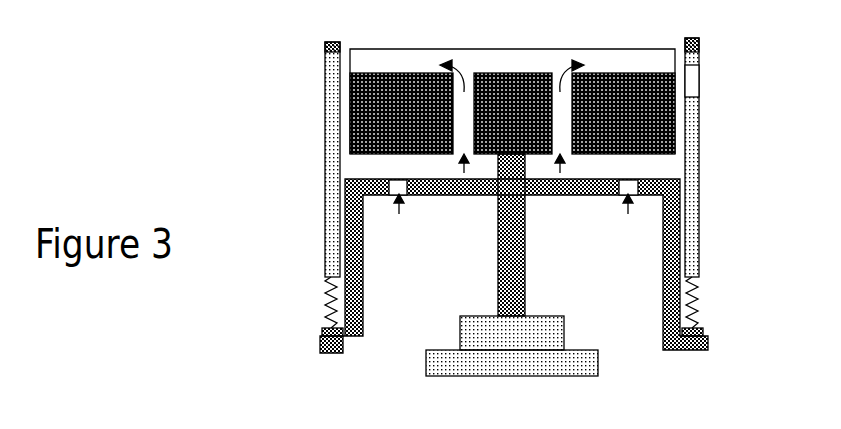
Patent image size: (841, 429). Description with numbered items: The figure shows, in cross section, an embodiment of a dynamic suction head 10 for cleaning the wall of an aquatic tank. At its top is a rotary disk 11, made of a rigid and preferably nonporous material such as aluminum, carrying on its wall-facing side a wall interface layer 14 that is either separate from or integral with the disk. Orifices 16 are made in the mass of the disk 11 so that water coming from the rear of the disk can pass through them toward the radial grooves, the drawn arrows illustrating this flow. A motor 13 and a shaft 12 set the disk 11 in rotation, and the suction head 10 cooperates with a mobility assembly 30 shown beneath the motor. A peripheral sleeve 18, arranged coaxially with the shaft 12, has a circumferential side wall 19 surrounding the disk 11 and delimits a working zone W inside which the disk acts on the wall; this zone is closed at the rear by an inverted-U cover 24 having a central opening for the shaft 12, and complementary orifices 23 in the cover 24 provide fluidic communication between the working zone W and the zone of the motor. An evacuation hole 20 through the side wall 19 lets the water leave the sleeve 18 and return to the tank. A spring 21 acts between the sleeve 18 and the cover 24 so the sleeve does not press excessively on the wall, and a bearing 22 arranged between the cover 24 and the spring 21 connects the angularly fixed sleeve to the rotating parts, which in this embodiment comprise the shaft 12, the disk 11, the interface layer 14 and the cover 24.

The dynamic suction head 10 is at (256, 50).
The disk 11 is at (365, 141).
The shaft 12 is at (518, 256).
The motor 13 is at (478, 343).
The wall interface layer 14 is at (527, 58).
The orifices 16 is at (464, 118).
The peripheral sleeve 18 is at (333, 87).
The circumferential side wall 19 is at (690, 142).
The evacuation hole 20 is at (700, 84).
The spring 21 is at (696, 300).
The bearing 22 is at (322, 334).
The complementary orifices 23 is at (623, 190).
The cover 24 is at (356, 250).
The mobility assembly 30 is at (588, 365).
The working zone W is at (638, 45).